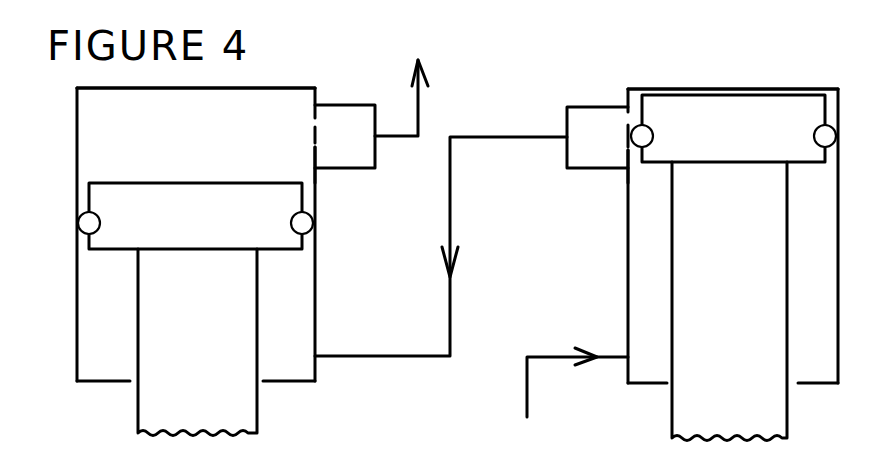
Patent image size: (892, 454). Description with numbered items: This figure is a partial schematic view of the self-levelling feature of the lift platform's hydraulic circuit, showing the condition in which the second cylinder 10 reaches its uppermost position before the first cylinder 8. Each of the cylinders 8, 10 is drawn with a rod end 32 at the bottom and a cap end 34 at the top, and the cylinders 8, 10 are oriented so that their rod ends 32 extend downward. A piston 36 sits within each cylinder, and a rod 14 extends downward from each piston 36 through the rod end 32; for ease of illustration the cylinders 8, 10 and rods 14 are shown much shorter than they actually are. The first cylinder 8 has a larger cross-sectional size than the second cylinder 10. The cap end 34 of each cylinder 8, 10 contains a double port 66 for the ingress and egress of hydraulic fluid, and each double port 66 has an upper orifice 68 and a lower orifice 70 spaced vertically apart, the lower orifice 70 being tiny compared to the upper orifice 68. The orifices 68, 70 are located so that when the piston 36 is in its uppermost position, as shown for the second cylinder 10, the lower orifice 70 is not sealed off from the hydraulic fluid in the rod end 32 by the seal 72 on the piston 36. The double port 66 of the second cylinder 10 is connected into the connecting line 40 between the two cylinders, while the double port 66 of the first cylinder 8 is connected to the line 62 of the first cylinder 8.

The first cylinder 8 is at (77, 283).
The second cylinder 10 is at (701, 236).
The rod 14 is at (414, 301).
The rod end 32 is at (90, 372).
The cap end 34 is at (95, 99).
The piston 36 is at (428, 172).
The connecting line 40 is at (450, 305).
The line 62 is at (401, 122).
The double port 66 is at (471, 115).
The upper orifice 68 is at (445, 106).
The lower orifice 70 is at (315, 147).
The seal 72 is at (313, 223).